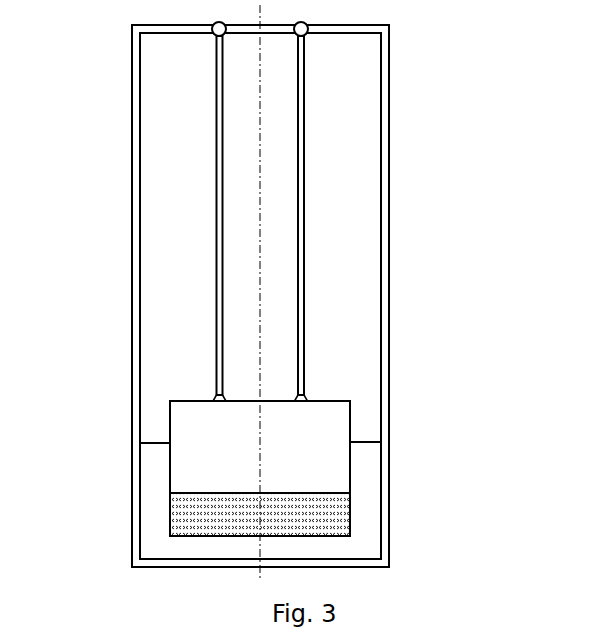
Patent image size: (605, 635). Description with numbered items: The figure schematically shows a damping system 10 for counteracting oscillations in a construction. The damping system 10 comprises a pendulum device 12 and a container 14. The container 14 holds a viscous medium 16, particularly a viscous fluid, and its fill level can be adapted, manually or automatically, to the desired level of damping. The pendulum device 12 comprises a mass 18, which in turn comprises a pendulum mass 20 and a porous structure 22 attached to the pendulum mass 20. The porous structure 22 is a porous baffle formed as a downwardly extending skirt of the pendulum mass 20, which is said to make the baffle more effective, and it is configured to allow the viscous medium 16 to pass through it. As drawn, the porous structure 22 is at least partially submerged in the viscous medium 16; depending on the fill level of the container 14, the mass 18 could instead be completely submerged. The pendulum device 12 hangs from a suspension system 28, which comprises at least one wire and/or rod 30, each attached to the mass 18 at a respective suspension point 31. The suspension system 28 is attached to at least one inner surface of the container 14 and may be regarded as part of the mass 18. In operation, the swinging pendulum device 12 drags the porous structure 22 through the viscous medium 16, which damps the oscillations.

The damping system 10 is at (487, 79).
The pendulum device 12 is at (356, 108).
The container 14 is at (388, 147).
The viscous medium 16 is at (360, 547).
The mass 18 is at (355, 360).
The pendulum mass 20 is at (327, 423).
The porous structure 22 is at (350, 525).
The suspension system 28 is at (175, 110).
The wire and/or rod 30 is at (217, 207).
The suspension point 31 is at (215, 397).